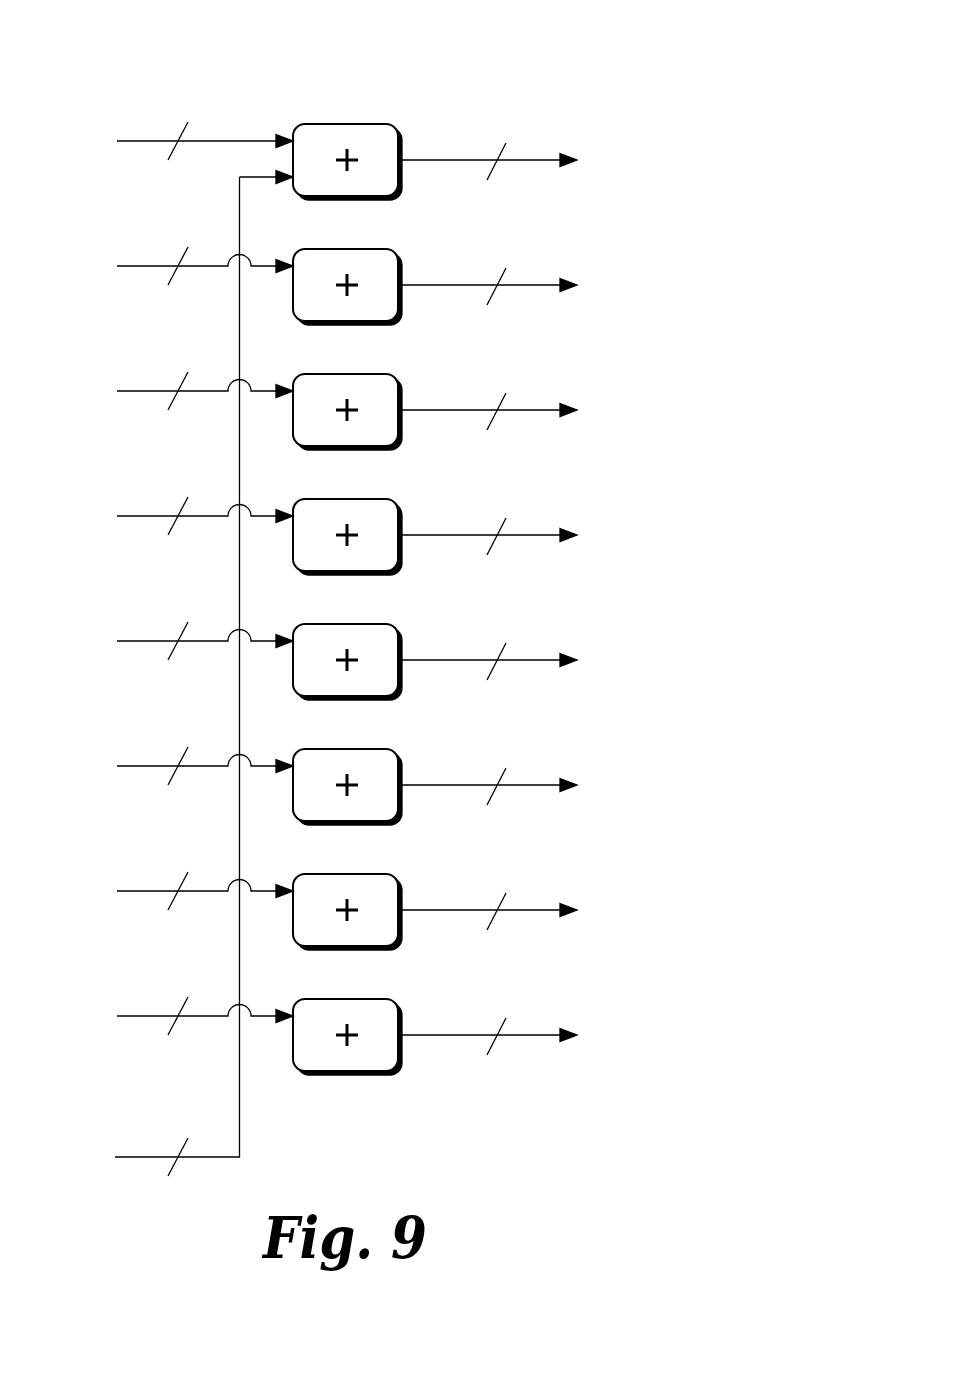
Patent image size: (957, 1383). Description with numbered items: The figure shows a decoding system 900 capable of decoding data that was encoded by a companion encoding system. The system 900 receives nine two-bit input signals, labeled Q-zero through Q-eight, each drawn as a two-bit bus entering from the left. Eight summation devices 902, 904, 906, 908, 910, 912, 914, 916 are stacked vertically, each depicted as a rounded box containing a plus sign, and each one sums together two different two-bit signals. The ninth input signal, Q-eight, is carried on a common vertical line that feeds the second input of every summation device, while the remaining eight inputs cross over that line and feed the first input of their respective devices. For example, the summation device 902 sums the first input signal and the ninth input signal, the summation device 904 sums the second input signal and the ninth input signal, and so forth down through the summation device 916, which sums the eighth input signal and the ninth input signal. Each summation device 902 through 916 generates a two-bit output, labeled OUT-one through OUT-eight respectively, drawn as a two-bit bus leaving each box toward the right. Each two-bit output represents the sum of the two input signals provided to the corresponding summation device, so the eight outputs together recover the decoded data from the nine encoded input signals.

The system 900 is at (204, 45).
The summation device 902 is at (347, 124).
The summation device 904 is at (347, 249).
The summation device 906 is at (347, 374).
The summation device 908 is at (347, 499).
The summation device 910 is at (347, 624).
The summation device 912 is at (347, 749).
The summation device 914 is at (347, 874).
The summation device 916 is at (347, 999).